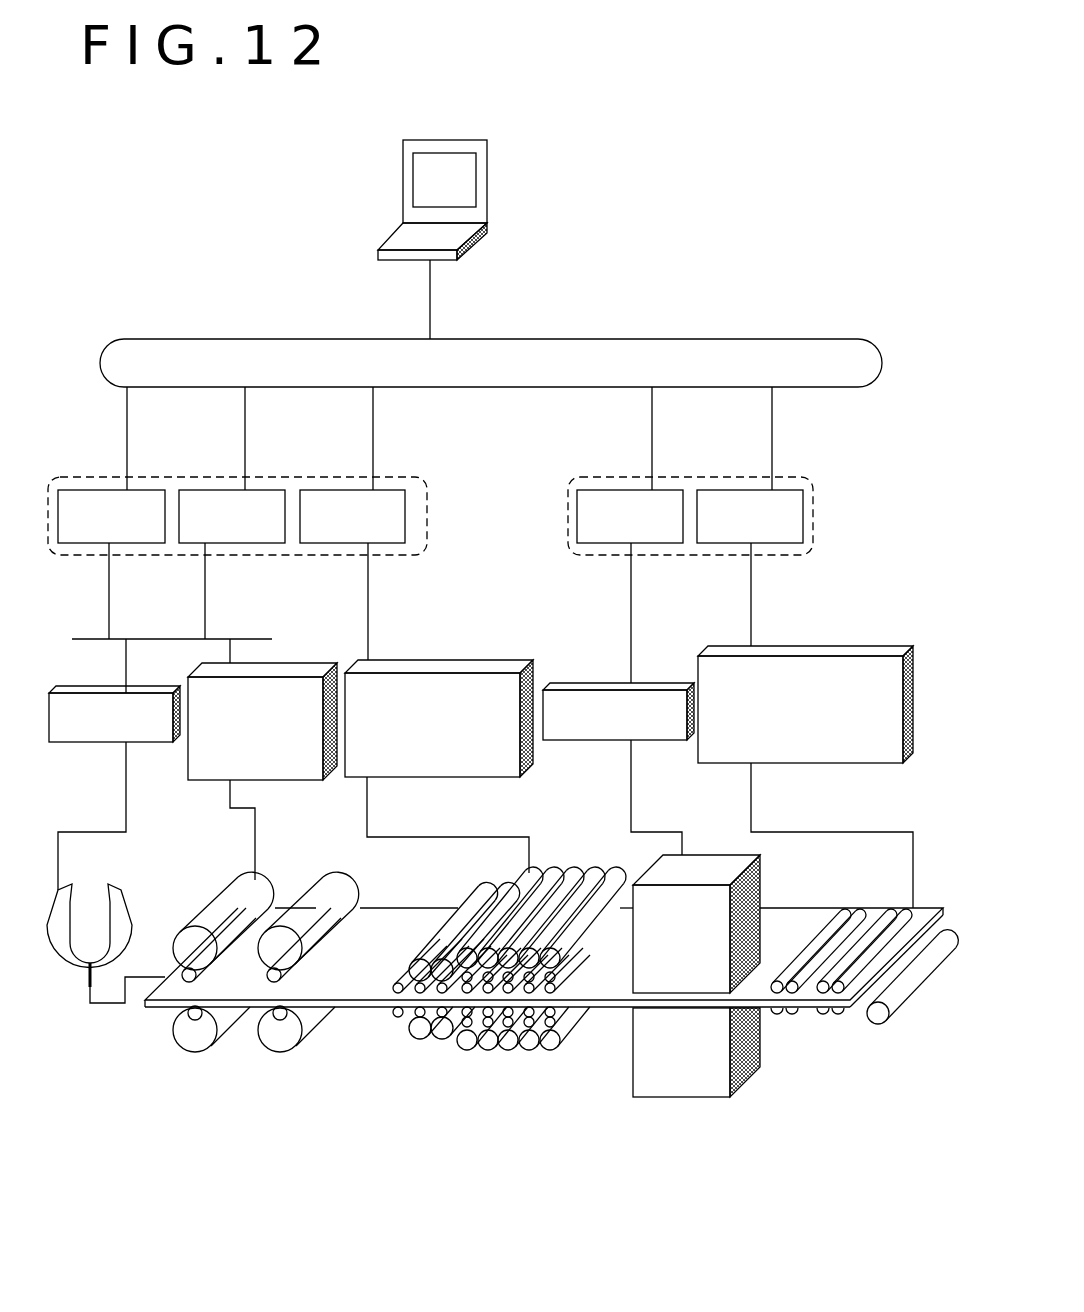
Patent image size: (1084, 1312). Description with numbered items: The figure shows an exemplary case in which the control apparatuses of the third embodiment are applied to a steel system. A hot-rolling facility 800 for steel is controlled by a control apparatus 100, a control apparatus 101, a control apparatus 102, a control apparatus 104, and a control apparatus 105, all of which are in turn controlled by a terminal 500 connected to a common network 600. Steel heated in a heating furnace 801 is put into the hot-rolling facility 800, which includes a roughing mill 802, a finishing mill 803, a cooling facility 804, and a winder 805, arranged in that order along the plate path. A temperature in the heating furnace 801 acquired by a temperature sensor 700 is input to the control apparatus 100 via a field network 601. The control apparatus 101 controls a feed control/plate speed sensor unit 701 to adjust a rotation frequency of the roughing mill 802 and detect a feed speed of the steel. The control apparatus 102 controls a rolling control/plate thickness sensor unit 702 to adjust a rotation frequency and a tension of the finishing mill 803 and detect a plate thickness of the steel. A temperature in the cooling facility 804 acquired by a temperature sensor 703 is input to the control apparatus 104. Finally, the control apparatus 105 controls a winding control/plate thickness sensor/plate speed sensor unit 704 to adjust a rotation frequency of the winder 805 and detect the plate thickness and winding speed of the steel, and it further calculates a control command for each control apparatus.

The terminal 500 is at (444, 140).
The common network 600 is at (780, 339).
The control apparatus 100 is at (83, 490).
The control apparatus 101 is at (203, 490).
The control apparatus 102 is at (324, 490).
The control apparatus 104 is at (601, 490).
The control apparatus 105 is at (723, 490).
The field network 601 is at (82, 639).
The temperature sensor 700 is at (88, 742).
The feed control/plate speed sensor unit 701 is at (212, 780).
The rolling control/plate thickness sensor unit 702 is at (450, 777).
The temperature sensor 703 is at (598, 740).
The winding control/plate thickness sensor/plate speed sensor unit 704 is at (843, 763).
The hot-rolling facility 800 is at (362, 1007).
The heating furnace 801 is at (90, 1017).
The roughing mill 802 is at (245, 1030).
The finishing mill 803 is at (497, 1052).
The cooling facility 804 is at (682, 1098).
The winder 805 is at (862, 1022).